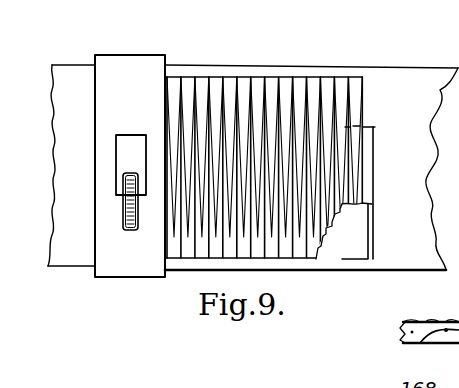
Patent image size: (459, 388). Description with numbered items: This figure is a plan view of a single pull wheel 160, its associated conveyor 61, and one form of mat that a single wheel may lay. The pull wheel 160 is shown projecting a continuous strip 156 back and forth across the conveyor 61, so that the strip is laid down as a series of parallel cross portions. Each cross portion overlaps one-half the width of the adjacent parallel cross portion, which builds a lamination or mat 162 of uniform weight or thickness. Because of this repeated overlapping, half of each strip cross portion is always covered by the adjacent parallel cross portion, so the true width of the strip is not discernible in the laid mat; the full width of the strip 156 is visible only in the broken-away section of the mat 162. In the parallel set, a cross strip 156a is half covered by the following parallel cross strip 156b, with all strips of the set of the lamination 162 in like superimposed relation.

The conveyor 61 is at (68, 268).
The continuous strip 156 is at (297, 165).
The cross strip 156a is at (311, 83).
The following parallel cross strip 156b is at (296, 80).
The pull wheel 160 is at (127, 231).
The lamination or mat 162 is at (300, 183).